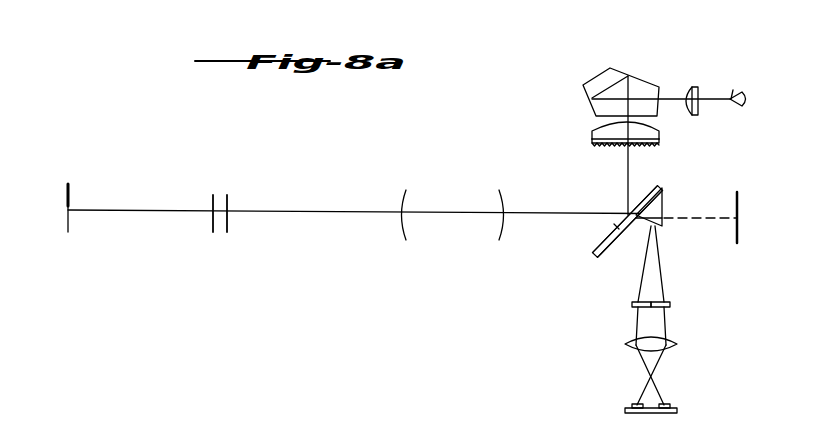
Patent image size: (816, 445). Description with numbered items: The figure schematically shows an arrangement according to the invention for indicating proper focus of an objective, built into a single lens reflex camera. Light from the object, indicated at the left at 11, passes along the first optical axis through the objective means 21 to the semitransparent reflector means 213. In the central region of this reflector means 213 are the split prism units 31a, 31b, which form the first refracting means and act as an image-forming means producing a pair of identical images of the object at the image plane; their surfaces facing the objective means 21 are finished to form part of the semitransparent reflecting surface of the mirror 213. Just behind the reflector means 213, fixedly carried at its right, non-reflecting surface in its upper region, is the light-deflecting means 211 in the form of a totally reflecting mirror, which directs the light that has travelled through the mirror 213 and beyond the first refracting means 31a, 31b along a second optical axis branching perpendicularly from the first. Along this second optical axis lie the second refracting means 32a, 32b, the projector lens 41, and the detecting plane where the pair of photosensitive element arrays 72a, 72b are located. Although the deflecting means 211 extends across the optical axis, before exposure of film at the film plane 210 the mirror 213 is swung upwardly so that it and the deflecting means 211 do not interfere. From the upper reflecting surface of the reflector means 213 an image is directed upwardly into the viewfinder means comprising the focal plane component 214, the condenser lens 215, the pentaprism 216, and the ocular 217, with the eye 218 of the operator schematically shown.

The light source 11 is at (68, 217).
The objective means 21 is at (443, 232).
The split prism unit 31a is at (637, 210).
The split prism unit 31b is at (617, 237).
The split prism unit 32a is at (670, 304).
The split prism unit 32b is at (632, 306).
The projector lens 41 is at (677, 345).
The photosensitive element array 72a is at (632, 405).
The photosensitive element array 72b is at (670, 406).
The film plane 210 is at (739, 202).
The light-deflecting means 211 is at (662, 207).
The semitransparent reflector means 213 is at (595, 251).
The focal plane component 214 is at (660, 142).
The condenser lens 215 is at (660, 130).
The pentaprism 216 is at (610, 68).
The ocular 217 is at (688, 90).
The eye 218 is at (737, 95).